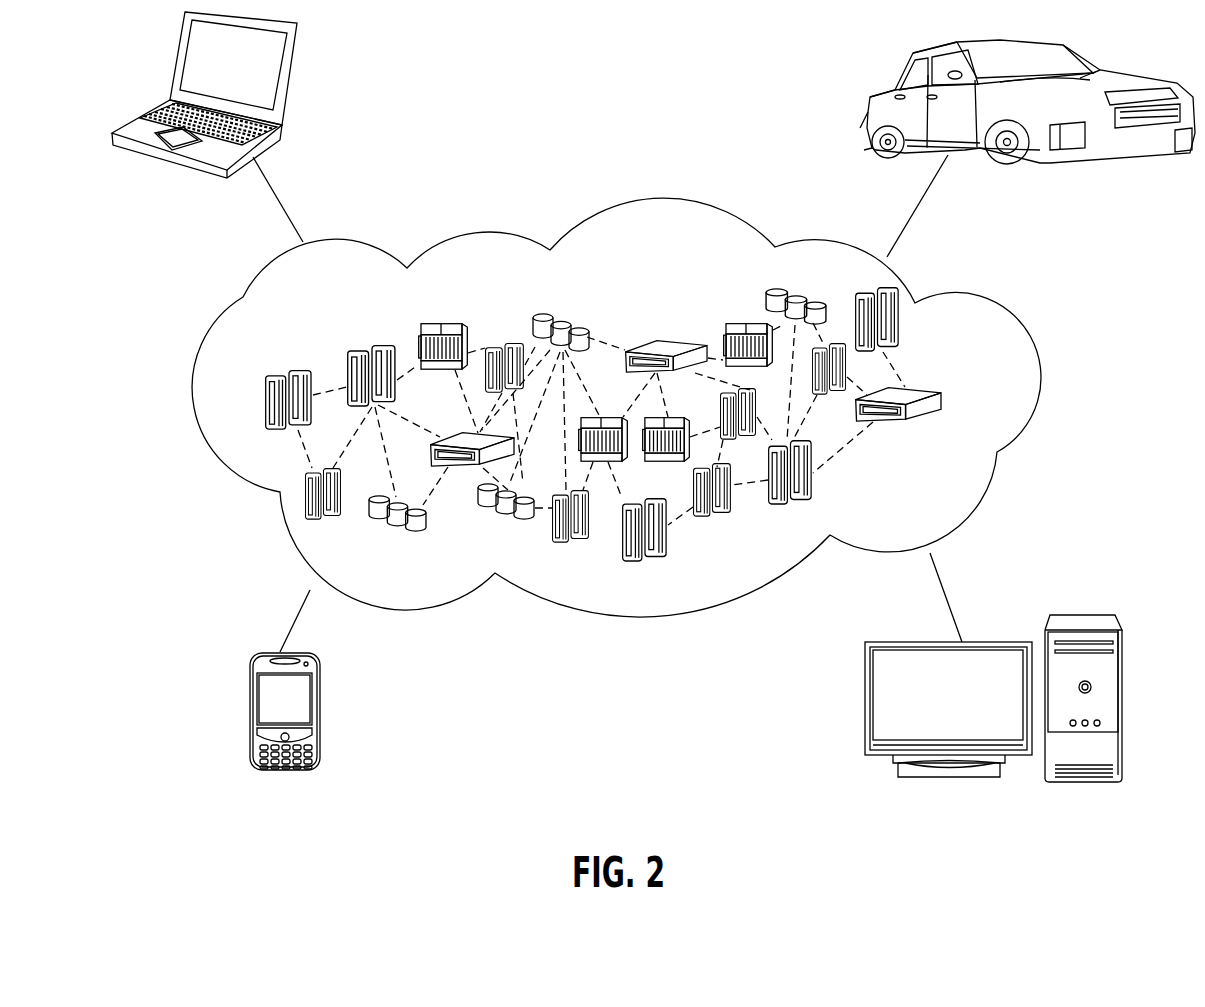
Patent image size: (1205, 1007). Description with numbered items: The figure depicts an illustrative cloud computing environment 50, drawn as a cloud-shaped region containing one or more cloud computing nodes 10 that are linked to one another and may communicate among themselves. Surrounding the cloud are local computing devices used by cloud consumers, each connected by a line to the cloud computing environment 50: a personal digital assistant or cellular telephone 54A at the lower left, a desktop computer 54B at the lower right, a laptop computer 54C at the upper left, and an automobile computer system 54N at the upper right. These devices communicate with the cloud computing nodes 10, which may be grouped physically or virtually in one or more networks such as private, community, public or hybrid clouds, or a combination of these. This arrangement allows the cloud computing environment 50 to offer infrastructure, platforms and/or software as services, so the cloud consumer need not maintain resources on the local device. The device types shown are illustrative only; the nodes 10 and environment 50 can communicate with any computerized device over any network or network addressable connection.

The cloud computing nodes 10 is at (690, 424).
The cloud computing environment 50 is at (1007, 313).
The personal digital assistant or cellular telephone 54A is at (250, 716).
The desktop computer 54B is at (1087, 615).
The laptop computer 54C is at (292, 80).
The automobile computer system 54N is at (878, 88).